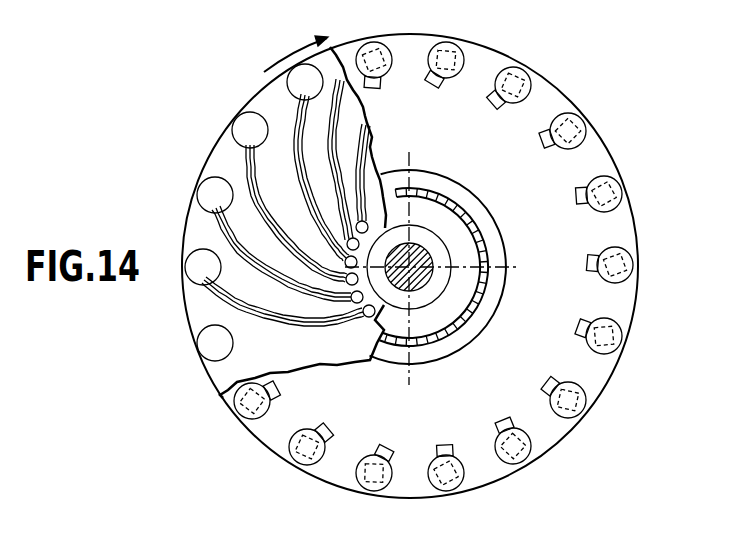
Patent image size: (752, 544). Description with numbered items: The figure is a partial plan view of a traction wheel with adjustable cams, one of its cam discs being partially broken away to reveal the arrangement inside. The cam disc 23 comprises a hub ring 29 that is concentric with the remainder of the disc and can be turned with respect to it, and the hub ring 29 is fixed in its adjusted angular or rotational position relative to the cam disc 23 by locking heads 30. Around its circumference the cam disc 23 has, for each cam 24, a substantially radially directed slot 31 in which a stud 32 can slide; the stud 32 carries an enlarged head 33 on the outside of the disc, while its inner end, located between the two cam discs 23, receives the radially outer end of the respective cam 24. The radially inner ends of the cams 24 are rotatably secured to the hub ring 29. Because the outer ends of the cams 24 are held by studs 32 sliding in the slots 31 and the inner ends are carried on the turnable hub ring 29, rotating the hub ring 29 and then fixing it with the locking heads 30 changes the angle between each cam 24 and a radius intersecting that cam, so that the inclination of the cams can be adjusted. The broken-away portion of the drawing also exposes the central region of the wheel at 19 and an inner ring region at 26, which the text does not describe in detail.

The shaft 19 is at (414, 246).
The cam disc 23 is at (615, 300).
The cam 24 is at (305, 323).
The hub 26 is at (437, 250).
The hub ring 29 is at (455, 300).
The locking head 30 is at (440, 348).
The slot 31 is at (546, 140).
The stud 32 is at (514, 67).
The enlarged head 33 is at (586, 139).